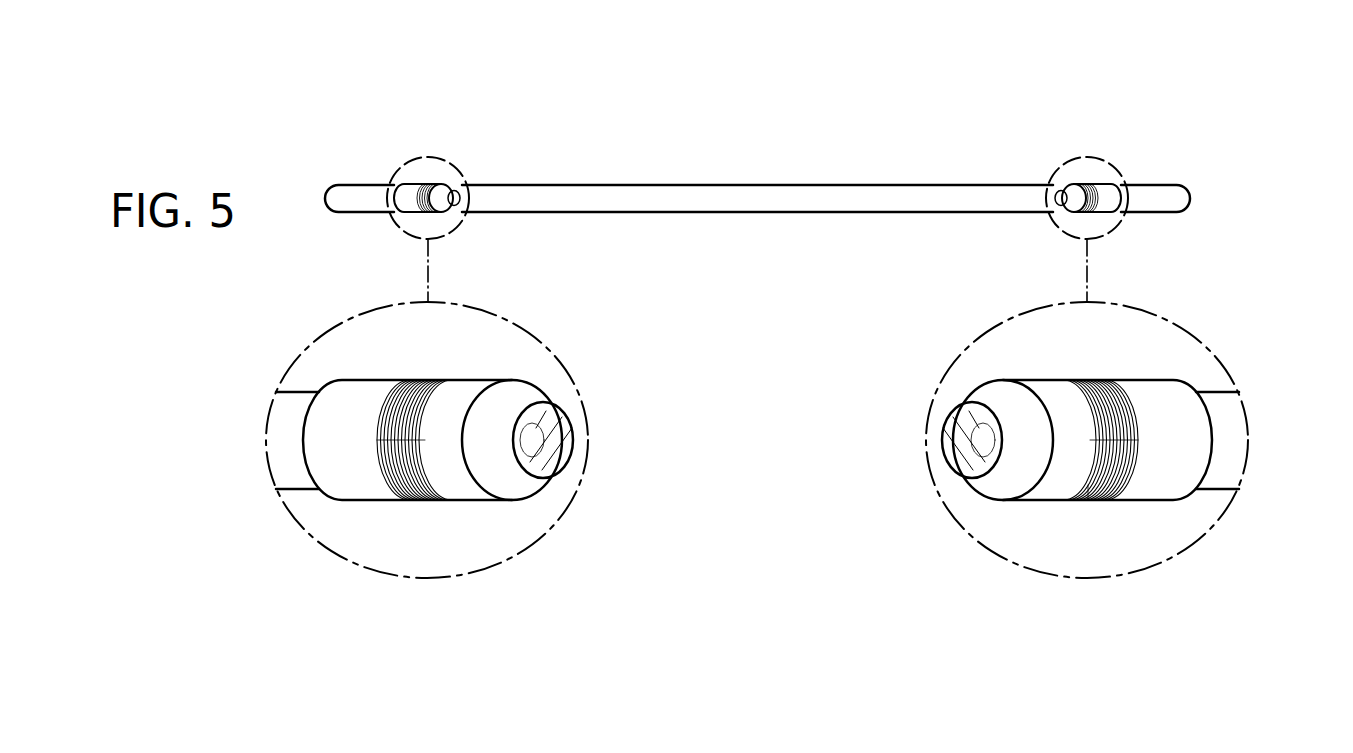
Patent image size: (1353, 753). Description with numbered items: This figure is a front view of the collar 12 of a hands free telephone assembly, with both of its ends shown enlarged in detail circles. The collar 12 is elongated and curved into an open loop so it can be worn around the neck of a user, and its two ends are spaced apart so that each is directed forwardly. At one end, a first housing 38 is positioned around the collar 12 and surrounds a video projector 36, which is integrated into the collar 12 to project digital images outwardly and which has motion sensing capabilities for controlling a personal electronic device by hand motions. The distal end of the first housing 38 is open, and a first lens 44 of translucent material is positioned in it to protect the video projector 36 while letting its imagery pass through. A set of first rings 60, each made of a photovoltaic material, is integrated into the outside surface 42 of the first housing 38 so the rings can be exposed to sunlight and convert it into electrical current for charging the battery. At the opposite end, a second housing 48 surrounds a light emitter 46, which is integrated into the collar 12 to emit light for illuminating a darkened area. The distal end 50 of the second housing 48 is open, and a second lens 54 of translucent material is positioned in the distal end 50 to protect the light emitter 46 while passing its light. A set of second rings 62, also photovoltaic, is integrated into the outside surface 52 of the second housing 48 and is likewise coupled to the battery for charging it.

The collar 12 is at (660, 186).
The video projector 36 is at (538, 442).
The first housing 38 is at (352, 490).
The outside surface 42 is at (367, 397).
The first lens 44 is at (544, 408).
The light emitter 46 is at (538, 487).
The second housing 48 is at (1196, 470).
The distal end 50 is at (1002, 482).
The outside surface 52 is at (1073, 423).
The second lens 54 is at (965, 418).
The first rings 60 is at (438, 494).
The second rings 62 is at (1085, 500).